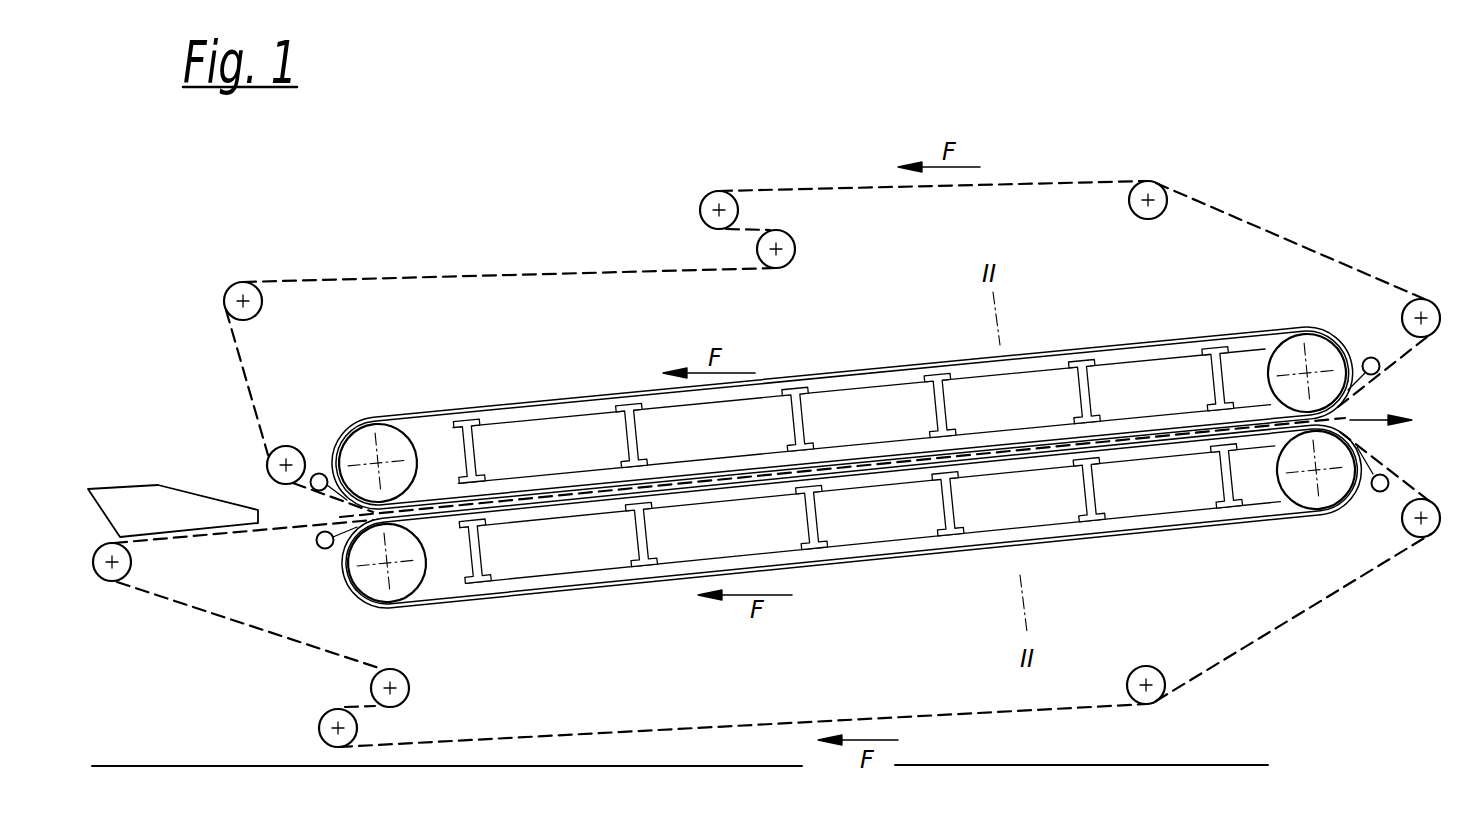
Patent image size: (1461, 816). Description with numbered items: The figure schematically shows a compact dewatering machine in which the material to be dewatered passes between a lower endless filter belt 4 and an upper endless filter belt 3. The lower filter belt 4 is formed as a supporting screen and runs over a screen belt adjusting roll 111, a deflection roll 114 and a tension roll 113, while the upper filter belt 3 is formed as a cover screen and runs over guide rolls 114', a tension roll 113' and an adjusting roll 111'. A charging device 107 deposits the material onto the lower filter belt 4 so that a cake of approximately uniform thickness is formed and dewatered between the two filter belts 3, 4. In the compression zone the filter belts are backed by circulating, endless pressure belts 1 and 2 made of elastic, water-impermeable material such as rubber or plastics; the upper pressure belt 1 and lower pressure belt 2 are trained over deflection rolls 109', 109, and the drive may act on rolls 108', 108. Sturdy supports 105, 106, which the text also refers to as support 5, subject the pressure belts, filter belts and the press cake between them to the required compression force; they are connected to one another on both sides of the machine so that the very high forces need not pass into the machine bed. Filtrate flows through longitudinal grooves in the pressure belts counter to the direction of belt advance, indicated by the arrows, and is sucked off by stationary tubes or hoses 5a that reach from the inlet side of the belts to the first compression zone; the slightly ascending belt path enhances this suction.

The upper pressure belt 1 is at (567, 394).
The lower pressure belt 2 is at (684, 578).
The upper endless filter belt 3 is at (405, 277).
The lower endless filter belt 4 is at (540, 736).
The support 5 is at (1040, 447).
The stationary tubes or hoses 5a is at (318, 472).
The support 105 is at (888, 537).
The support 106 is at (855, 400).
The charging device 107 is at (148, 487).
The drive roll 108 is at (1315, 494).
The drive roll 108' is at (1306, 348).
The deflection roll 109 is at (386, 585).
The deflection roll 109' is at (377, 433).
The screen belt adjusting roll 111 is at (1147, 657).
The adjusting roll 111' is at (1160, 167).
The tension roll 113 is at (318, 711).
The tension roll 113' is at (807, 249).
The deflection roll 114 is at (422, 688).
The guide rolls 114' is at (689, 200).